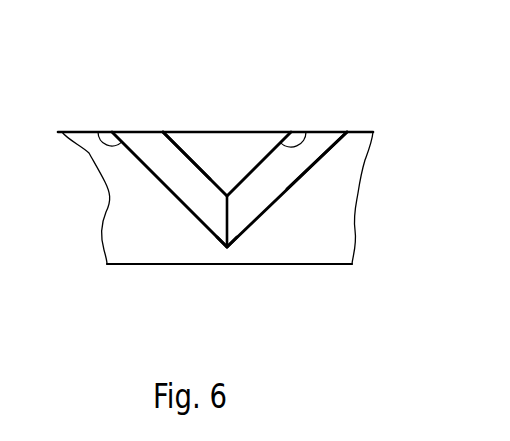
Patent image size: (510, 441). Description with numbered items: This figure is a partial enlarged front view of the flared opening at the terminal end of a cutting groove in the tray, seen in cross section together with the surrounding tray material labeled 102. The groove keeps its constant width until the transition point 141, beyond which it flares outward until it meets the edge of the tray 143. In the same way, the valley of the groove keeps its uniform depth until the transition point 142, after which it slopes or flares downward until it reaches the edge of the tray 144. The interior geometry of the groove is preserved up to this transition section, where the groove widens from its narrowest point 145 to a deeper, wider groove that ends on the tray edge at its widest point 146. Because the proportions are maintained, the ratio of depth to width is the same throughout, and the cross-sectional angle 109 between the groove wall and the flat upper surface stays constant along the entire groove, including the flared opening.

The substrate 102 is at (362, 132).
The cross-sectional angle 109 is at (108, 143).
The transition point 141 is at (166, 132).
The transition point 142 is at (227, 196).
The edge of the tray 143 is at (347, 132).
The edge of the tray 144 is at (228, 249).
The narrowest point 145 is at (205, 168).
The widest point 146 is at (285, 192).